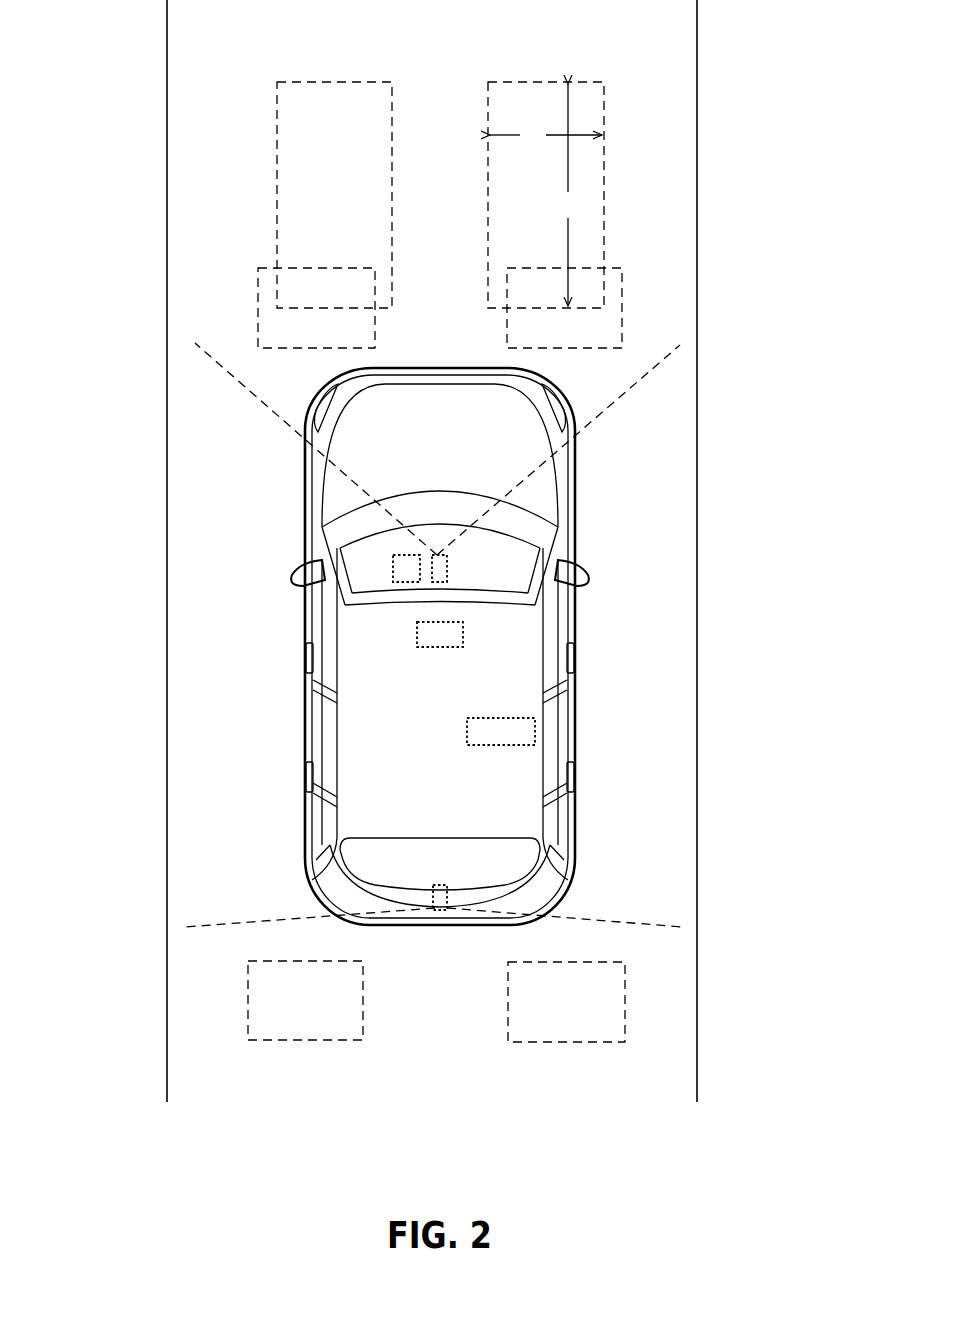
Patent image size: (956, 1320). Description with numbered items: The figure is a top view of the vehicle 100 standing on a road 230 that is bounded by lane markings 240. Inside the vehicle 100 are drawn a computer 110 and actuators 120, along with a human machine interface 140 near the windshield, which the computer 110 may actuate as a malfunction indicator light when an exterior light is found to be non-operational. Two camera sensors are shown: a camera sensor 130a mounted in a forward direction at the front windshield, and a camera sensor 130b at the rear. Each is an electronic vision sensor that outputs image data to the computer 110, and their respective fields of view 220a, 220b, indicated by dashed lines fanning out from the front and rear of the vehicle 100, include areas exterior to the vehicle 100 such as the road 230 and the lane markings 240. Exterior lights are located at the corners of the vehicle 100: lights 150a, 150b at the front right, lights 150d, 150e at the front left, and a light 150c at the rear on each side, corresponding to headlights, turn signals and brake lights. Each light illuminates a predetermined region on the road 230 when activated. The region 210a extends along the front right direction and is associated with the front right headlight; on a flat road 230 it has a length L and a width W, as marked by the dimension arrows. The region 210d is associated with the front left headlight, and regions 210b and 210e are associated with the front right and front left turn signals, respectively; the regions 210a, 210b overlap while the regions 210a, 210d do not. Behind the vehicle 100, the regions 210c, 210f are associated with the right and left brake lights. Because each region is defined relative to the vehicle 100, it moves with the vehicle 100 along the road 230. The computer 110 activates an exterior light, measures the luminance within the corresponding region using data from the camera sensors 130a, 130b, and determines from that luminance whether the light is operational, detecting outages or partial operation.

The vehicle 100 is at (460, 821).
The computer 110 is at (415, 627).
The actuators 120 is at (537, 731).
The camera sensor 130a is at (450, 568).
The camera sensor 130b is at (453, 892).
The human machine interface 140 is at (392, 568).
The exterior light 150a is at (525, 380).
The exterior light 150b is at (555, 403).
The exterior light 150c is at (317, 892).
The exterior light 150d is at (352, 381).
The exterior light 150e is at (323, 405).
The region 210a is at (604, 98).
The region 210b is at (622, 297).
The region 210c is at (625, 995).
The region 210d is at (273, 120).
The region 210e is at (258, 297).
The region 210f is at (248, 997).
The field of view 220a is at (640, 434).
The field of view 220b is at (634, 907).
The road 230 is at (440, 1098).
The lane markings 240 is at (167, 1085).